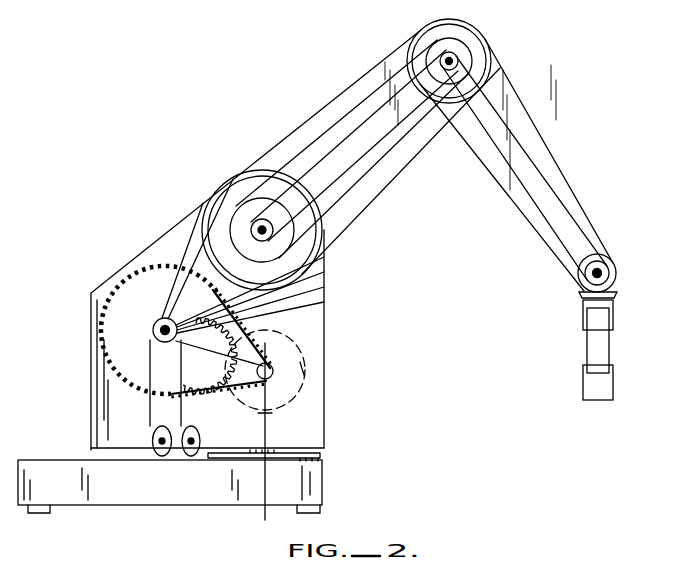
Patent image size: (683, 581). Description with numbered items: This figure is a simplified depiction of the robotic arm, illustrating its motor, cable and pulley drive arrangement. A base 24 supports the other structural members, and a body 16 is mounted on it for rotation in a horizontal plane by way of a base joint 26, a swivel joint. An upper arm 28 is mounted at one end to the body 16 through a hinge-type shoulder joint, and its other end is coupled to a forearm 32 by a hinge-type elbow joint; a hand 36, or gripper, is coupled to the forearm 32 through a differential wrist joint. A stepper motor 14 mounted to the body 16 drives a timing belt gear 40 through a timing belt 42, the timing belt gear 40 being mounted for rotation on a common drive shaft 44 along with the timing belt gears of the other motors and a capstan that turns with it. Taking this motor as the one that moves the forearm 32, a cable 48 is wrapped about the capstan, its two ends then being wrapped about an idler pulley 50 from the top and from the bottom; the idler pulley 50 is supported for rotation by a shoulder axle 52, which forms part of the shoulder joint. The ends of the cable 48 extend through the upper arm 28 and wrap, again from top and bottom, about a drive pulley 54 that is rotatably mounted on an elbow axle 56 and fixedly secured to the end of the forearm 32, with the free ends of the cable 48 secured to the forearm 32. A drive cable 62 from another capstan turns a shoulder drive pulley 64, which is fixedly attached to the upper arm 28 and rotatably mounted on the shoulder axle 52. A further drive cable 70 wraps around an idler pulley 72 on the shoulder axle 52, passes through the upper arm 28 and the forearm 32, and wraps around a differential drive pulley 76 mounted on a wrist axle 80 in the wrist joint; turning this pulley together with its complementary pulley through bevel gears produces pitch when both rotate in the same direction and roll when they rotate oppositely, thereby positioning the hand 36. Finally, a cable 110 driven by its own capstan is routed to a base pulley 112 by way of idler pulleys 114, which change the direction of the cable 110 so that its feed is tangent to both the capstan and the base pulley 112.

The stepper motor 14 is at (305, 368).
The body 16 is at (178, 228).
The base 24 is at (50, 460).
The base joint 26 is at (285, 436).
The upper arm 28 is at (362, 77).
The forearm 32 is at (527, 118).
The hand 36 is at (613, 352).
The timing belt gear 40 is at (143, 346).
The timing belt 42 is at (205, 398).
The common drive shaft 44 is at (155, 322).
The cable 48 is at (303, 152).
The idler pulley 50 is at (265, 198).
The shoulder axle 52 is at (323, 260).
The drive pulley 54 is at (457, 38).
The elbow axle 56 is at (462, 51).
The drive cable 62 is at (240, 308).
The shoulder drive pulley 64 is at (243, 175).
The drive cable 70 is at (370, 147).
The idler pulley 72 is at (323, 284).
The differential drive pulley 76 is at (578, 268).
The wrist axle 80 is at (606, 266).
The cable 110 is at (150, 410).
The base pulley 112 is at (328, 455).
The idler pulley 114 is at (152, 439).